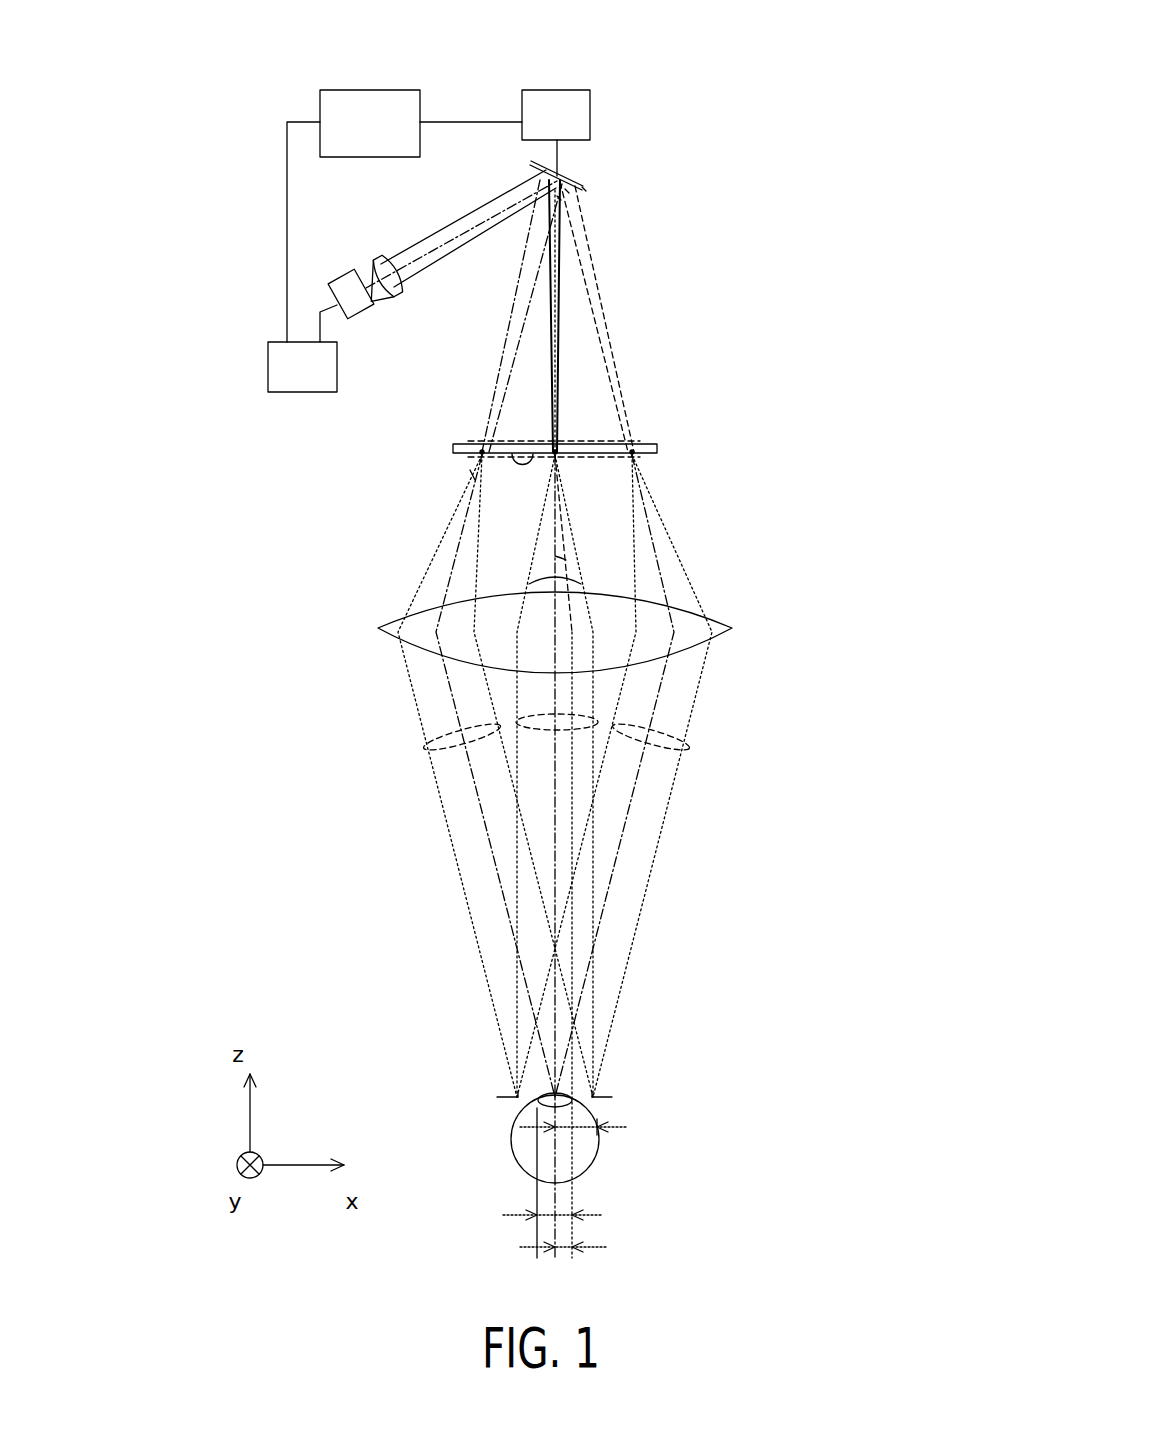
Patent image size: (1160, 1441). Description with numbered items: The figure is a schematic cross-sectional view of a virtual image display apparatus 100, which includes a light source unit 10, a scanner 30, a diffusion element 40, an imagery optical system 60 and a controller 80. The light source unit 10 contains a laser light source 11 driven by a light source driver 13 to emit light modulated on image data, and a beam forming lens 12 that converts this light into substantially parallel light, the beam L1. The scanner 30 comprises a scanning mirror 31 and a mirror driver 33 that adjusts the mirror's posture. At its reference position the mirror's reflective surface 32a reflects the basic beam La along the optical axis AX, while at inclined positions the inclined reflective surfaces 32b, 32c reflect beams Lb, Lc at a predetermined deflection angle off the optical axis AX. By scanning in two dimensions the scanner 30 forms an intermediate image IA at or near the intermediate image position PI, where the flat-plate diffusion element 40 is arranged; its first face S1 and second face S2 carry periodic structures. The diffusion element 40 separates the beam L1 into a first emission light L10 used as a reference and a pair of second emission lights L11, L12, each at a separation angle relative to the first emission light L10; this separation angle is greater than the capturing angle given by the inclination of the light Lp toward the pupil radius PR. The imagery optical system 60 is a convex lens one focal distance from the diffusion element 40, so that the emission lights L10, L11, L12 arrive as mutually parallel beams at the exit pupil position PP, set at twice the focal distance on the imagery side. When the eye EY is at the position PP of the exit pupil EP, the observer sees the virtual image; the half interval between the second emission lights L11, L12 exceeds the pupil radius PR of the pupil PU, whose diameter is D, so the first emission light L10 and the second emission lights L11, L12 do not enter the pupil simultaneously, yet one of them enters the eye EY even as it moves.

The virtual image display apparatus 100 is at (753, 104).
The scanner 30 is at (614, 106).
The controller 80 is at (372, 105).
The mirror driver 33 is at (558, 105).
The light source unit 10 is at (264, 311).
The laser light source 11 is at (352, 304).
The beam forming lens 12 is at (384, 262).
The light source driver 13 is at (302, 393).
The scanning mirror 31 is at (574, 184).
The reflective surface 32a is at (560, 199).
The inclined reflective surface 32b is at (568, 192).
The inclined reflective surface 32c is at (586, 189).
The diffusion element 40 is at (657, 446).
The imagery optical system 60 is at (734, 630).
The beam L1 is at (466, 218).
The basic beam La is at (517, 720).
The beam Lb is at (506, 329).
The beam Lc is at (612, 342).
The first emission light L10 is at (555, 522).
The second emission light L11 is at (541, 510).
The second emission light L12 is at (573, 535).
The light Lp is at (572, 972).
The first face S1 is at (614, 443).
The second face S2 is at (505, 445).
The intermediate image position PI is at (445, 449).
The intermediate image IA is at (468, 477).
The optical axis AX is at (560, 703).
The pupil PU is at (514, 1080).
The position of the exit pupil PP is at (605, 1092).
The eye EY is at (600, 1152).
The exit pupil EP is at (530, 1103).
The pupil diameter D is at (563, 1183).
The pupil radius PR is at (574, 1233).